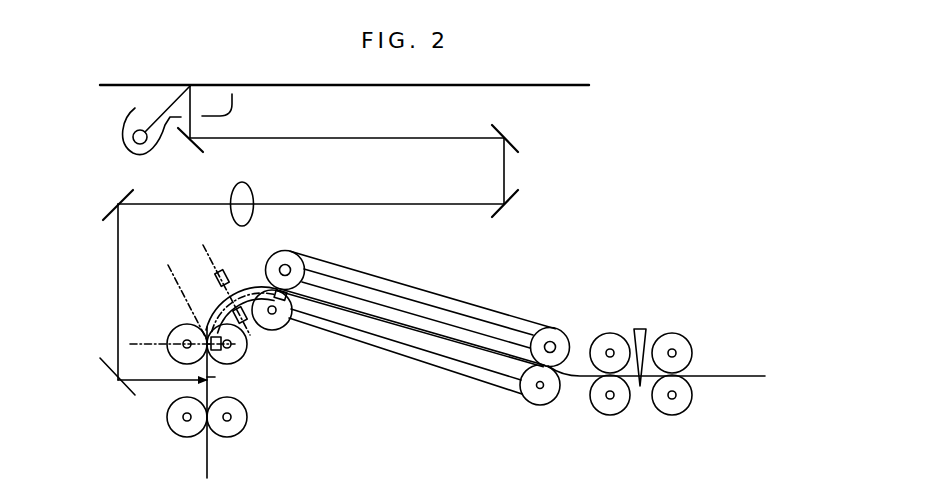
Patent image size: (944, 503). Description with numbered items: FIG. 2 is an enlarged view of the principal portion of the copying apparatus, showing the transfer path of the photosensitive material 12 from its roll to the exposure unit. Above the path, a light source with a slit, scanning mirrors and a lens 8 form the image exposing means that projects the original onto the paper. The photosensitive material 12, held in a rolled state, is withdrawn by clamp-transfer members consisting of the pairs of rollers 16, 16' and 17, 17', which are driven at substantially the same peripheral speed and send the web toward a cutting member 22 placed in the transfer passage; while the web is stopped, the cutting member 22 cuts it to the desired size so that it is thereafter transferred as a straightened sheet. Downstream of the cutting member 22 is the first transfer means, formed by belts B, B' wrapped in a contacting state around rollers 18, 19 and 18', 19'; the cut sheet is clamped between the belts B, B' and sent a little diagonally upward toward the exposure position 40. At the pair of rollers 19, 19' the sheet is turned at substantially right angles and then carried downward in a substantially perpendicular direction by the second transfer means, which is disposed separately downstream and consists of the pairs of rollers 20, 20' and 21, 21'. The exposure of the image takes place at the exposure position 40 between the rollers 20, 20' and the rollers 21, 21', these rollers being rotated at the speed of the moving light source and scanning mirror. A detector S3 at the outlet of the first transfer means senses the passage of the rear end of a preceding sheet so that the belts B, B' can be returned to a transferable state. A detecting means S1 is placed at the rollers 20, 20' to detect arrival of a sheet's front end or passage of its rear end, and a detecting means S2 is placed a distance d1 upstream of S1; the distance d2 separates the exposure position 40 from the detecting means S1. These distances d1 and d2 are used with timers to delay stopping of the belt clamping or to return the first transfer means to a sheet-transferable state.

The lens 8 is at (240, 212).
The photosensitive material 12 is at (210, 460).
The roller 16 is at (672, 330).
The roller 16' is at (672, 416).
The roller 17 is at (610, 330).
The roller 17' is at (610, 416).
The roller 18 is at (551, 325).
The roller 18' is at (542, 409).
The roller 19 is at (289, 249).
The roller 19' is at (294, 330).
The roller 20 is at (173, 328).
The roller 20' is at (252, 357).
The roller 21 is at (161, 417).
The roller 21' is at (253, 420).
The cutting member 22 is at (641, 327).
The exposure position 40 is at (215, 378).
The belt B is at (418, 308).
The belt B' is at (410, 359).
The detecting means S1 is at (231, 350).
The detecting means S2 is at (226, 272).
The detector S3 is at (287, 292).
The distance d1 is at (218, 248).
The distance d2 is at (142, 326).